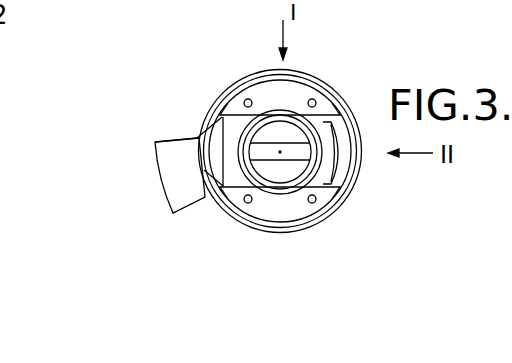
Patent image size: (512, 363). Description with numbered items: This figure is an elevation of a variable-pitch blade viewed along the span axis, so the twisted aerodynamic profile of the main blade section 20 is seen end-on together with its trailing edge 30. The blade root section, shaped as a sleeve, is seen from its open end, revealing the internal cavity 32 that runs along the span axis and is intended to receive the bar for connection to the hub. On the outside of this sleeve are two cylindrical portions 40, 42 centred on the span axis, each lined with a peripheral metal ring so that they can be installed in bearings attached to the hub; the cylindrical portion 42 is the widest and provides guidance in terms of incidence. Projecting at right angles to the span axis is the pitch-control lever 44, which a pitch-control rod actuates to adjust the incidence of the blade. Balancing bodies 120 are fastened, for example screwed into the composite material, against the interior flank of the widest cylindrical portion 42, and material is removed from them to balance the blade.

The main blade section 20 is at (173, 153).
The trailing edge 30 is at (158, 185).
The internal cavity 32 is at (298, 152).
The cylindrical portion 40 is at (277, 193).
The cylindrical portion 42 is at (340, 200).
The pitch-control lever 44 is at (223, 147).
The balancing body 120 is at (297, 93).